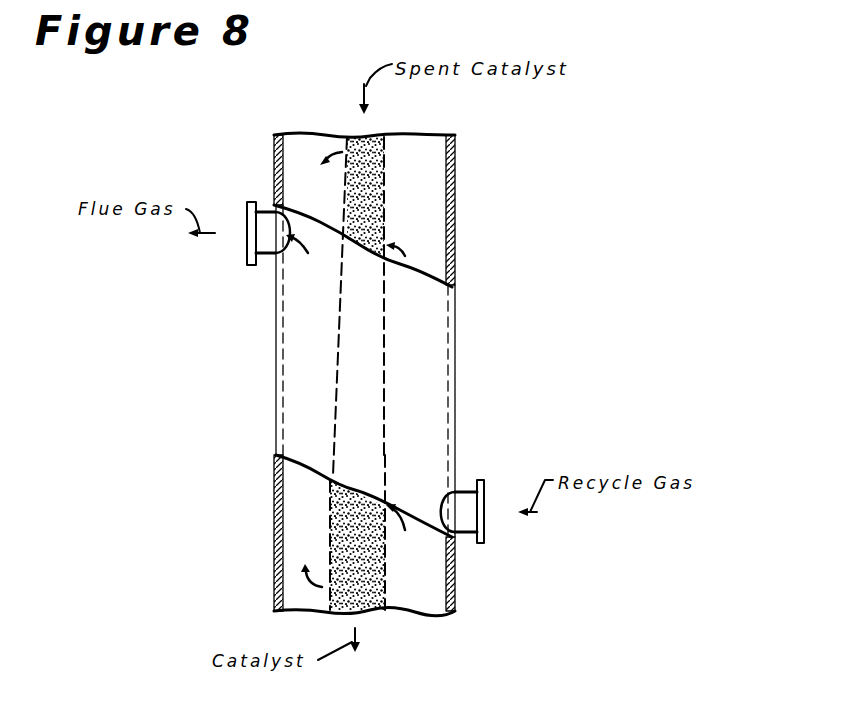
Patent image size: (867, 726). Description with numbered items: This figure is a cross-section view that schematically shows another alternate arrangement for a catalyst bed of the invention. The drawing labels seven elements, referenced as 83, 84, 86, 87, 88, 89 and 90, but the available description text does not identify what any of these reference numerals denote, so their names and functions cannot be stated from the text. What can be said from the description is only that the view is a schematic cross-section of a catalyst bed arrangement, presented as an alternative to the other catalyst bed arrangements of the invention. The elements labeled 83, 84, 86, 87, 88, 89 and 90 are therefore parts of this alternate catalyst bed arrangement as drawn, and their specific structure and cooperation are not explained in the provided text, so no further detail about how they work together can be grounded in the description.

The vessel shell 83 is at (456, 250).
The catalyst column (dashed catalyst flow passage) 84 is at (384, 170).
The inclined baffle 86 is at (347, 192).
The recycle gas inlet nozzle 87 is at (478, 480).
The flue gas outlet nozzle 88 is at (250, 265).
The upper chamber 89 is at (432, 223).
The lower chamber 90 is at (319, 503).